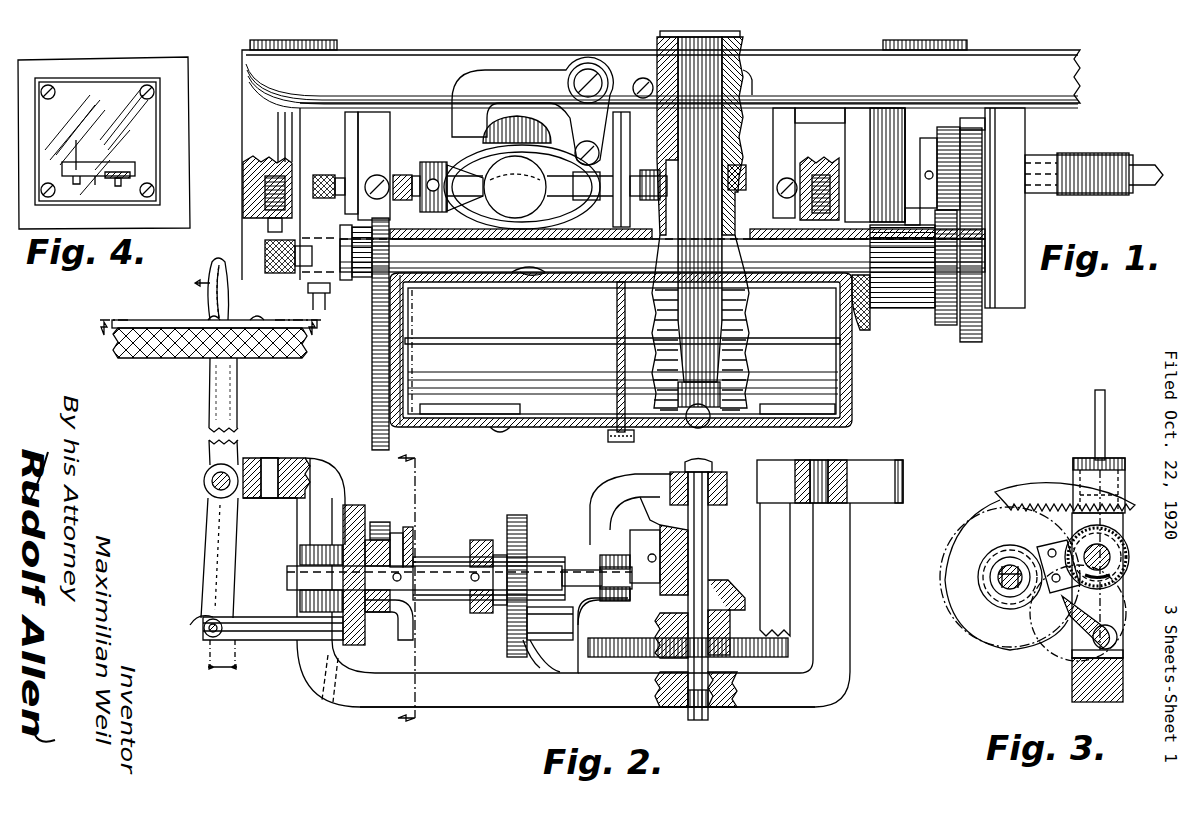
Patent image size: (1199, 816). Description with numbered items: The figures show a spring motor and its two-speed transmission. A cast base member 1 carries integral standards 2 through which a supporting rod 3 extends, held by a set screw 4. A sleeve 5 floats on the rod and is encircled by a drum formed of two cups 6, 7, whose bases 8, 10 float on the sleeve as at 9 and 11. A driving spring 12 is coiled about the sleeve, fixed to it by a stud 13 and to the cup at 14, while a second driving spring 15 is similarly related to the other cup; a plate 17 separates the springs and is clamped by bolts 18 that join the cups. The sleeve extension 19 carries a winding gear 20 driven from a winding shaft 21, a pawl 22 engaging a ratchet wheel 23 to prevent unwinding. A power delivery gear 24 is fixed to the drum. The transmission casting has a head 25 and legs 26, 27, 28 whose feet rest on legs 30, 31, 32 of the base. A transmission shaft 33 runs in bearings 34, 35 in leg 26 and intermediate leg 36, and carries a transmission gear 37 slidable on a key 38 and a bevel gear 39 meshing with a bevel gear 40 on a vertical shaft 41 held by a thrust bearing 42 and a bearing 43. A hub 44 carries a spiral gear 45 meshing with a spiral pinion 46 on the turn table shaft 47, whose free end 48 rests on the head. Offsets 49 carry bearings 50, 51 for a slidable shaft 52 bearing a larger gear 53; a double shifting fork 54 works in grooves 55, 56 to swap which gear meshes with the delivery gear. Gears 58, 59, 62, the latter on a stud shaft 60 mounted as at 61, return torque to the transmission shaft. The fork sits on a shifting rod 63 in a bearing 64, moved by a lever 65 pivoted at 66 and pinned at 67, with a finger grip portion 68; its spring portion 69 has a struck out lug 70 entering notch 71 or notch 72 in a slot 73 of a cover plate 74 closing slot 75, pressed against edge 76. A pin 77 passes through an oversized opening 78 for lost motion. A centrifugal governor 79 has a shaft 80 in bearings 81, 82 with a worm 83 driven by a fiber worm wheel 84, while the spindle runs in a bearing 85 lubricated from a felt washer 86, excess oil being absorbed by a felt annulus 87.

In FIG. 1, the base member 1 is at (1010, 52).
In FIG. 1, the standards 2 is at (1040, 218).
In FIG. 1, the supporting rod 3 is at (490, 282).
In FIG. 2, the supporting rod 3 is at (418, 594).
In FIG. 1, the set screw 4 is at (326, 312).
In FIG. 2, the set screw 4 is at (210, 318).
In FIG. 1, the sleeve 5 is at (585, 282).
In FIG. 1, the cup 6 is at (845, 427).
In FIG. 1, the cup 7 is at (556, 428).
In FIG. 1, the base of cup 6 8 is at (852, 356).
In FIG. 1, the encircling portion 9 is at (872, 325).
In FIG. 1, the base of cup 7 10 is at (406, 318).
In FIG. 1, the encircling portion 11 is at (412, 288).
In FIG. 1, the driving spring 12 is at (520, 345).
In FIG. 1, the stud 13 is at (538, 280).
In FIG. 1, the securing point 14 is at (502, 435).
In FIG. 1, the driving spring 15 is at (805, 345).
In FIG. 1, the plate 17 is at (617, 365).
In FIG. 1, the bolts 18 is at (612, 444).
In FIG. 1, the sleeve extension 19 is at (912, 308).
In FIG. 1, the gear 20 is at (972, 342).
In FIG. 1, the winding shaft 21 is at (1045, 193).
In FIG. 1, the pawl 22 is at (946, 325).
In FIG. 1, the ratchet wheel 23 is at (965, 125).
In FIG. 1, the power delivery gear 24 is at (372, 388).
In FIG. 3, the power delivery gear 24 is at (1038, 488).
In FIG. 2, the head 25 is at (640, 707).
In FIG. 3, the head 25 is at (1123, 692).
In FIG. 2, the leg 26 is at (298, 690).
In FIG. 2, the leg 27 is at (780, 558).
In FIG. 2, the leg 28 is at (826, 592).
In FIG. 1, the leg 30 is at (243, 205).
In FIG. 1, the leg 31 is at (790, 208).
In FIG. 1, the leg 32 is at (895, 140).
In FIG. 2, the transmission shaft 33 is at (460, 565).
In FIG. 3, the transmission shaft 33 is at (1112, 557).
In FIG. 2, the bearing 34 is at (300, 550).
In FIG. 2, the bearing 35 is at (598, 540).
In FIG. 2, the intermediate leg 36 is at (620, 600).
In FIG. 2, the transmission gear 37 is at (383, 522).
In FIG. 3, the transmission gear 37 is at (1112, 508).
In FIG. 2, the key 38 is at (413, 530).
In FIG. 2, the bevel gear 39 is at (655, 495).
In FIG. 2, the bevel gear 40 is at (722, 600).
In FIG. 2, the vertical shaft 41 is at (703, 555).
In FIG. 2, the thrust bearing 42 is at (716, 718).
In FIG. 2, the bearing 43 is at (718, 465).
In FIG. 2, the hub 44 is at (665, 630).
In FIG. 2, the spiral gear 45 is at (625, 657).
In FIG. 1, the spiral pinion 46 is at (720, 395).
In FIG. 1, the turn table shaft 47 is at (745, 300).
In FIG. 1, the free end of spindle 48 is at (695, 428).
In FIG. 3, the offsets 49 is at (1040, 600).
In FIG. 2, the bearing 50 is at (300, 598).
In FIG. 2, the bearing 51 is at (604, 607).
In FIG. 2, the slidable shaft 52 is at (440, 590).
In FIG. 3, the slidable shaft 52 is at (1005, 590).
In FIG. 2, the gear 53 is at (350, 505).
In FIG. 3, the gear 53 is at (980, 590).
In FIG. 3, the double shifting fork 54 is at (1005, 525).
In FIG. 2, the groove 55 is at (396, 533).
In FIG. 3, the groove 55 is at (1120, 572).
In FIG. 2, the groove 56 is at (405, 640).
In FIG. 3, the groove 56 is at (990, 595).
In FIG. 2, the gear 58 is at (513, 515).
In FIG. 3, the gear 58 is at (1128, 540).
In FIG. 2, the gear 59 is at (513, 657).
In FIG. 3, the gear 59 is at (1055, 650).
In FIG. 2, the stud shaft 60 is at (540, 668).
In FIG. 2, the mounting point 61 is at (552, 640).
In FIG. 2, the gear 62 is at (470, 606).
In FIG. 2, the shifting rod 63 is at (262, 642).
In FIG. 2, the bearing 64 is at (323, 700).
In FIG. 2, the lever 65 is at (208, 528).
In FIG. 2, the pivot 66 is at (210, 484).
In FIG. 3, the pivot 66 is at (1120, 456).
In FIG. 2, the pinned end 67 is at (205, 636).
In FIG. 2, the finger grip portion 68 is at (228, 300).
In FIG. 2, the lever portion 69 is at (209, 405).
In FIG. 3, the lever portion 69 is at (1095, 402).
In FIG. 4, the struck out lug 70 is at (128, 165).
In FIG. 2, the struck out lug 70 is at (195, 320).
In FIG. 4, the notch 71 is at (118, 186).
In FIG. 4, the notch 72 is at (78, 152).
In FIG. 4, the slot 73 is at (104, 160).
In FIG. 4, the cover plate 74 is at (137, 128).
In FIG. 2, the slot 75 is at (165, 360).
In FIG. 4, the edge of slot 76 is at (96, 190).
In FIG. 2, the pin 77 is at (210, 650).
In FIG. 2, the opening 78 is at (196, 625).
In FIG. 1, the centrifugal governor 79 is at (432, 170).
In FIG. 1, the governor shaft 80 is at (644, 165).
In FIG. 1, the bearing 81 is at (402, 175).
In FIG. 1, the bearing 82 is at (768, 162).
In FIG. 1, the worm 83 is at (652, 192).
In FIG. 1, the fiber worm wheel 84 is at (735, 205).
In FIG. 1, the bearing 85 is at (752, 86).
In FIG. 1, the felt washer 86 is at (740, 36).
In FIG. 1, the felt annulus 87 is at (773, 132).